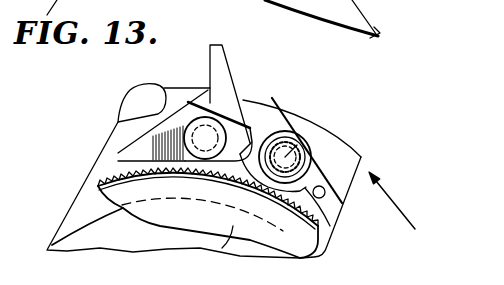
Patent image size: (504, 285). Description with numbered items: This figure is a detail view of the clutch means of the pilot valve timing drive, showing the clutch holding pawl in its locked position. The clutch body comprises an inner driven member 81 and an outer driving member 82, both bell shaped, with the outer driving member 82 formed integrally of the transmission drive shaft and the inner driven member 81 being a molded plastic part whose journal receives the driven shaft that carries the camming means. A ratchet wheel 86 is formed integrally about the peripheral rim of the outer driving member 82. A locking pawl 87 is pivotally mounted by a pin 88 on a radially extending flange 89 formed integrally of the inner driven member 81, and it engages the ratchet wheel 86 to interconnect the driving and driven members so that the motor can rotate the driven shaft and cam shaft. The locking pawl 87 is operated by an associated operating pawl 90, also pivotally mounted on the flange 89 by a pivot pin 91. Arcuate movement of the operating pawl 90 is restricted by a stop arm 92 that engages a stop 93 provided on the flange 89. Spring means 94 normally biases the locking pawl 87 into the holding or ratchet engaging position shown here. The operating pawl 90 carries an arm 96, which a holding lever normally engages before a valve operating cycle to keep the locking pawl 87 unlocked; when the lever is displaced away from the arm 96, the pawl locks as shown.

The inner driven member 81 is at (110, 234).
The outer driving member 82 is at (214, 252).
The ratchet wheel 86 is at (334, 228).
The locking pawl 87 is at (343, 141).
The pin 88 is at (293, 147).
The radially extending flange 89 is at (258, 103).
The operating pawl 90 is at (240, 100).
The pivot pin 91 is at (205, 142).
The stop arm 92 is at (136, 158).
The stop 93 is at (133, 97).
The spring means 94 is at (362, 157).
The arm 96 is at (228, 56).